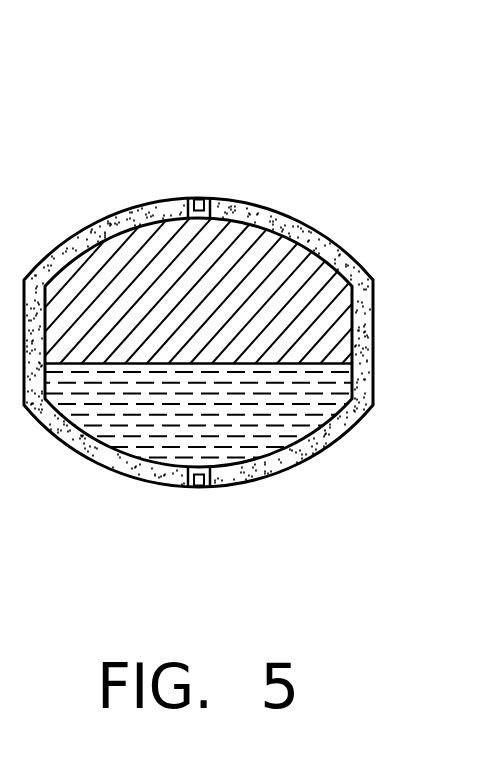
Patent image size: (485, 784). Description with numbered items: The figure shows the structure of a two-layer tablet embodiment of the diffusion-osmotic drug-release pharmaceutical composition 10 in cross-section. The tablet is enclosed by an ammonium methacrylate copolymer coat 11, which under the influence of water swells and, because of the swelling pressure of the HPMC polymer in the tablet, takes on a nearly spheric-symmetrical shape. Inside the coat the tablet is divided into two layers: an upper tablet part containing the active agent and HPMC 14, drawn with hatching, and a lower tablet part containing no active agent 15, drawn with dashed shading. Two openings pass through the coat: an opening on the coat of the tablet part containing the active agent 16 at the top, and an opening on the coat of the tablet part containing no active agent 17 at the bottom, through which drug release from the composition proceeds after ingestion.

The diffusion-osmotic drug-release pharmaceutical composition 10 is at (357, 258).
The ammonium methacrylate copolymer coat 11 is at (263, 208).
The tablet part containing the active agent and HPMC 14 is at (290, 290).
The tablet part containing no active agent 15 is at (280, 423).
The opening on the coat of tablet part containing the active agent 16 is at (200, 198).
The opening on the coat of tablet part containing no active agent 17 is at (198, 487).